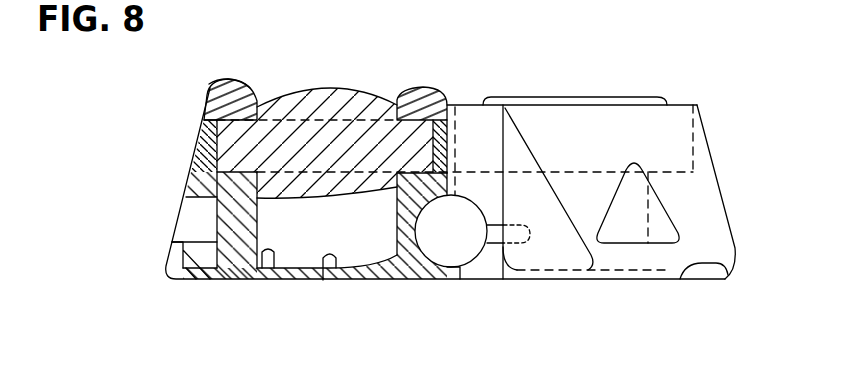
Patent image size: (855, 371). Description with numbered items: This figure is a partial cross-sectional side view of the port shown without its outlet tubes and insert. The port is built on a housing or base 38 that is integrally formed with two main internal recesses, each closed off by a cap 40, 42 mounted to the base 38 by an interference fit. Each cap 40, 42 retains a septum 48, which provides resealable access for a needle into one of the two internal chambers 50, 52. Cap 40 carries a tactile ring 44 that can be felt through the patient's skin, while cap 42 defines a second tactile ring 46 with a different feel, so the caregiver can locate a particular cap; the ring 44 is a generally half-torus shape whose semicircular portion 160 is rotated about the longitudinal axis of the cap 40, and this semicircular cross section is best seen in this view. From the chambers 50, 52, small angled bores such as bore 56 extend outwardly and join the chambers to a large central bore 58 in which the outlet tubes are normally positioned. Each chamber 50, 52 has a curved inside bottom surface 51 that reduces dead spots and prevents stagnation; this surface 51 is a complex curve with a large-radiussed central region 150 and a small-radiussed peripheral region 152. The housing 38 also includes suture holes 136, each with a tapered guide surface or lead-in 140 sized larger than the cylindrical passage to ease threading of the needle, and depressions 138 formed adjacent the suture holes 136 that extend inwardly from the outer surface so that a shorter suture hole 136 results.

The housing 38 is at (200, 128).
The cap 40 is at (209, 88).
The cap 42 is at (636, 97).
The tactile ring 44 is at (421, 88).
The second tactile ring 46 is at (519, 105).
The septum 48 is at (333, 90).
The internal chamber 50 is at (296, 279).
The curved inside bottom surface 51 is at (395, 260).
The internal chamber 52 is at (640, 232).
The angled bore 56 is at (494, 252).
The large central bore 58 is at (462, 279).
The suture hole 136 is at (209, 282).
The depression 138 is at (186, 197).
The lead-in 140 is at (184, 279).
The central region 150 is at (336, 268).
The peripheral region 152 is at (273, 272).
The semicircular portion 160 is at (236, 80).